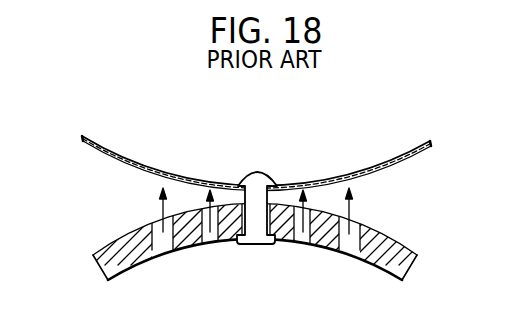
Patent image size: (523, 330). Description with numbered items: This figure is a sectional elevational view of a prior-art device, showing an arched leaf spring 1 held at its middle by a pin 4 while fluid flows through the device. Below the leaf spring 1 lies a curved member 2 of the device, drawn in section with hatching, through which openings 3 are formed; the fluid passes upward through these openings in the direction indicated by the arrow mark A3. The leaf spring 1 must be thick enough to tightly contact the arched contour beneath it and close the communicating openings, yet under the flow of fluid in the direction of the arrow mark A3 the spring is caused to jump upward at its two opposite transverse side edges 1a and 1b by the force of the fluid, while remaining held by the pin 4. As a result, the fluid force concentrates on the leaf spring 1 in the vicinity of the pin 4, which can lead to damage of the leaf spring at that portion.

The arched leaf spring 1 is at (220, 181).
The transverse side edge 1a is at (83, 138).
The transverse side edge 1b is at (431, 143).
The support plate 2 is at (116, 244).
The aperture 3 is at (164, 251).
The pin 4 is at (250, 245).
The arrow mark indicating fluid flow direction A3 is at (163, 214).